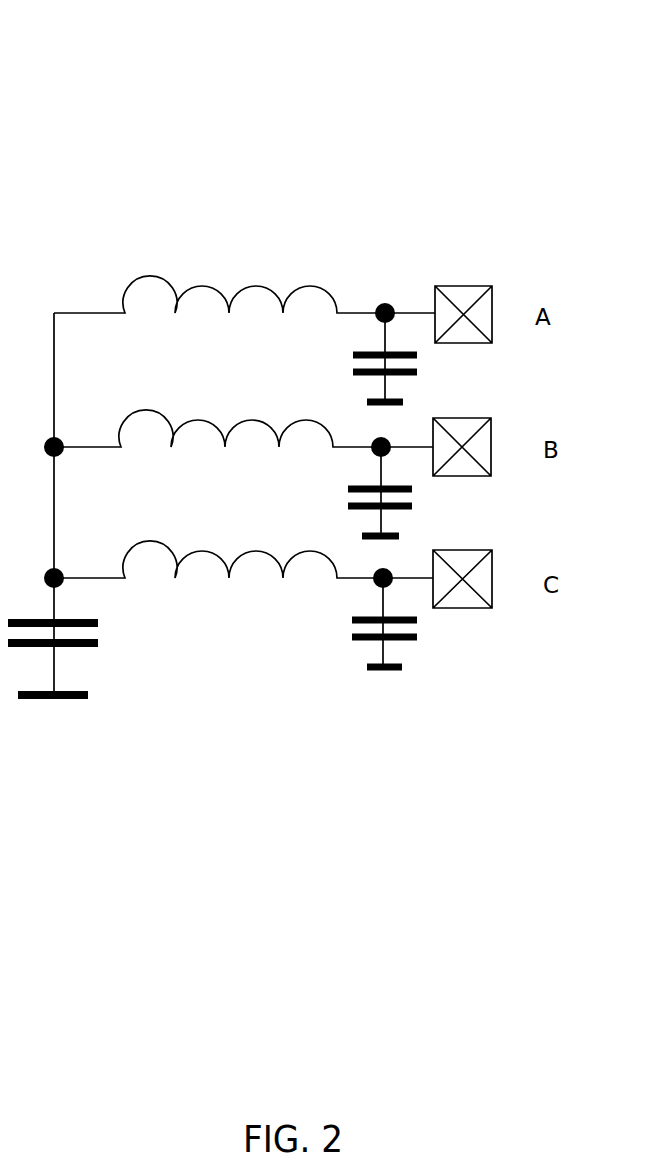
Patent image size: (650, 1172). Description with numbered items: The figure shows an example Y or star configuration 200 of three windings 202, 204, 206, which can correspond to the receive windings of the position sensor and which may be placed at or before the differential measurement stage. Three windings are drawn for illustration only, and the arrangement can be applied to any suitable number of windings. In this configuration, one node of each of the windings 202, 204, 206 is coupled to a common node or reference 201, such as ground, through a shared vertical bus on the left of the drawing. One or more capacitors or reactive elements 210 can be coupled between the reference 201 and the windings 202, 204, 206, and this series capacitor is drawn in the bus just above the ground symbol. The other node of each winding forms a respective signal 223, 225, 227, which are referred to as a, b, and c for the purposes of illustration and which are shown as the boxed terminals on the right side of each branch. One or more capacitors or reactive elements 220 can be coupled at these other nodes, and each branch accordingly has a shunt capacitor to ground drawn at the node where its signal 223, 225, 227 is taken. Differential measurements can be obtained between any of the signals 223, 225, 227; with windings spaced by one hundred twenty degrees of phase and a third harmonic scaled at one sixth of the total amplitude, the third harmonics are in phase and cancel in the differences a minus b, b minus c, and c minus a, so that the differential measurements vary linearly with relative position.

The Y or star configuration 200 is at (110, 127).
The winding 202 is at (244, 277).
The winding 204 is at (243, 410).
The winding 206 is at (243, 540).
The capacitors or reactive elements 220 is at (353, 372).
The capacitors or reactive elements 210 is at (80, 628).
The common node or reference 201 is at (77, 697).
The signal 223 is at (505, 312).
The signal 225 is at (503, 447).
The signal 227 is at (503, 579).